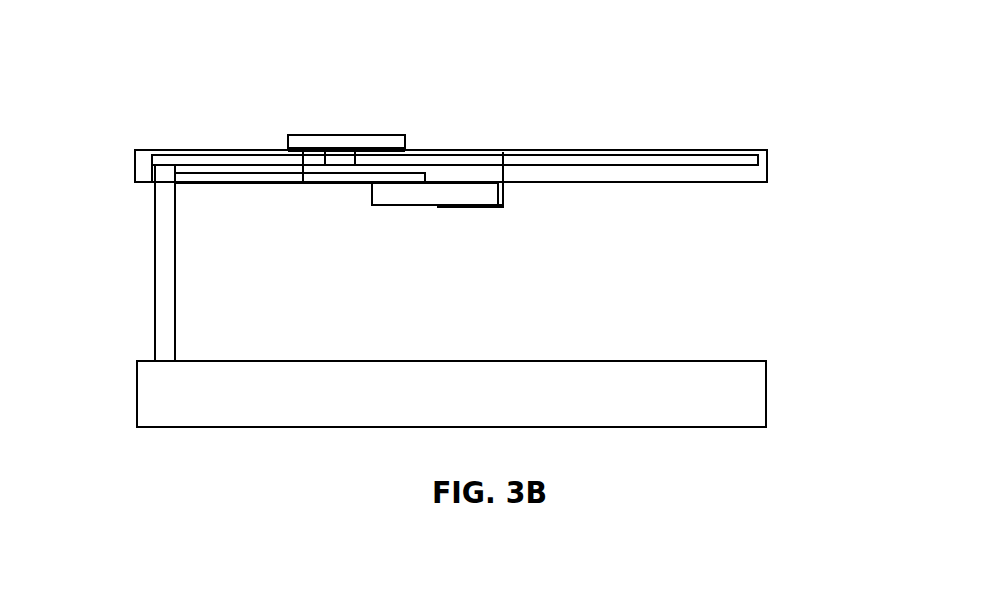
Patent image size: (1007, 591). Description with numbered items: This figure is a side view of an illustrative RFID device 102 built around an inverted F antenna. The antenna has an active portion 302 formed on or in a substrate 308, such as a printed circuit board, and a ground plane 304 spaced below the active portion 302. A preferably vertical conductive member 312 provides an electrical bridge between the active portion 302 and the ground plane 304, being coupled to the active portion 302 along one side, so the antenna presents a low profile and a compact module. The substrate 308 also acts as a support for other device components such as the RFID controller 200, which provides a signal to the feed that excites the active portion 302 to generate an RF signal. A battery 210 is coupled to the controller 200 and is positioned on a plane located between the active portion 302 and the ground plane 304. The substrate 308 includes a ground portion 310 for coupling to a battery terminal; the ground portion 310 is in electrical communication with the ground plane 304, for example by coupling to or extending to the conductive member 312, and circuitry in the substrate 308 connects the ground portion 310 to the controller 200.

The RFID device 102 is at (106, 139).
The RFID controller 200 is at (326, 133).
The battery 210 is at (417, 207).
The active portion 302 is at (675, 153).
The ground plane 304 is at (766, 387).
The substrate 308 is at (767, 165).
The ground portion 310 is at (263, 183).
The conductive member 312 is at (155, 258).